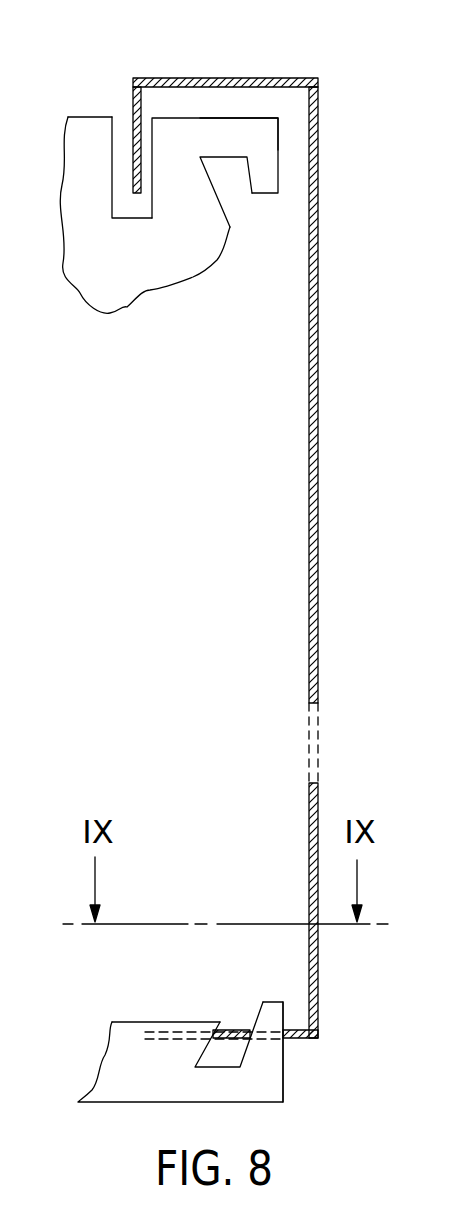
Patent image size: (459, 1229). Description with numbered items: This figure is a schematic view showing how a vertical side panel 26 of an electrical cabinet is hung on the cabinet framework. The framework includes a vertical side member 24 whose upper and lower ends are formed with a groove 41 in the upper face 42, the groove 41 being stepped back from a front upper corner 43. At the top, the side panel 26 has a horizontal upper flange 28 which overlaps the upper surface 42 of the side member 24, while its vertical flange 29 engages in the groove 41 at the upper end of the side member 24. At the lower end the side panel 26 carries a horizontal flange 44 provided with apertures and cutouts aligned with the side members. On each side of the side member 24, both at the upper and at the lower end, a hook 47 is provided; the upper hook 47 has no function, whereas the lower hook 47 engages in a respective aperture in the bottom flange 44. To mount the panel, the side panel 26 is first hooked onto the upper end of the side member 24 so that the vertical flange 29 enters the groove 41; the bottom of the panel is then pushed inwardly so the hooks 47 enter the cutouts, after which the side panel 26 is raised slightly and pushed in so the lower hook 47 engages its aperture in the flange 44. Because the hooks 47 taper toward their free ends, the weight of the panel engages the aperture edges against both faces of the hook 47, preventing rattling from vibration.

The side member 24 is at (118, 288).
The side panel 26 is at (308, 533).
The horizontal upper flange 28 is at (206, 78).
The vertical flange 29 is at (132, 100).
The groove 41 is at (142, 205).
The upper face 42 is at (250, 118).
The front upper corner 43 is at (278, 125).
The horizontal flange 44 is at (232, 1023).
The hook 47 is at (263, 178).